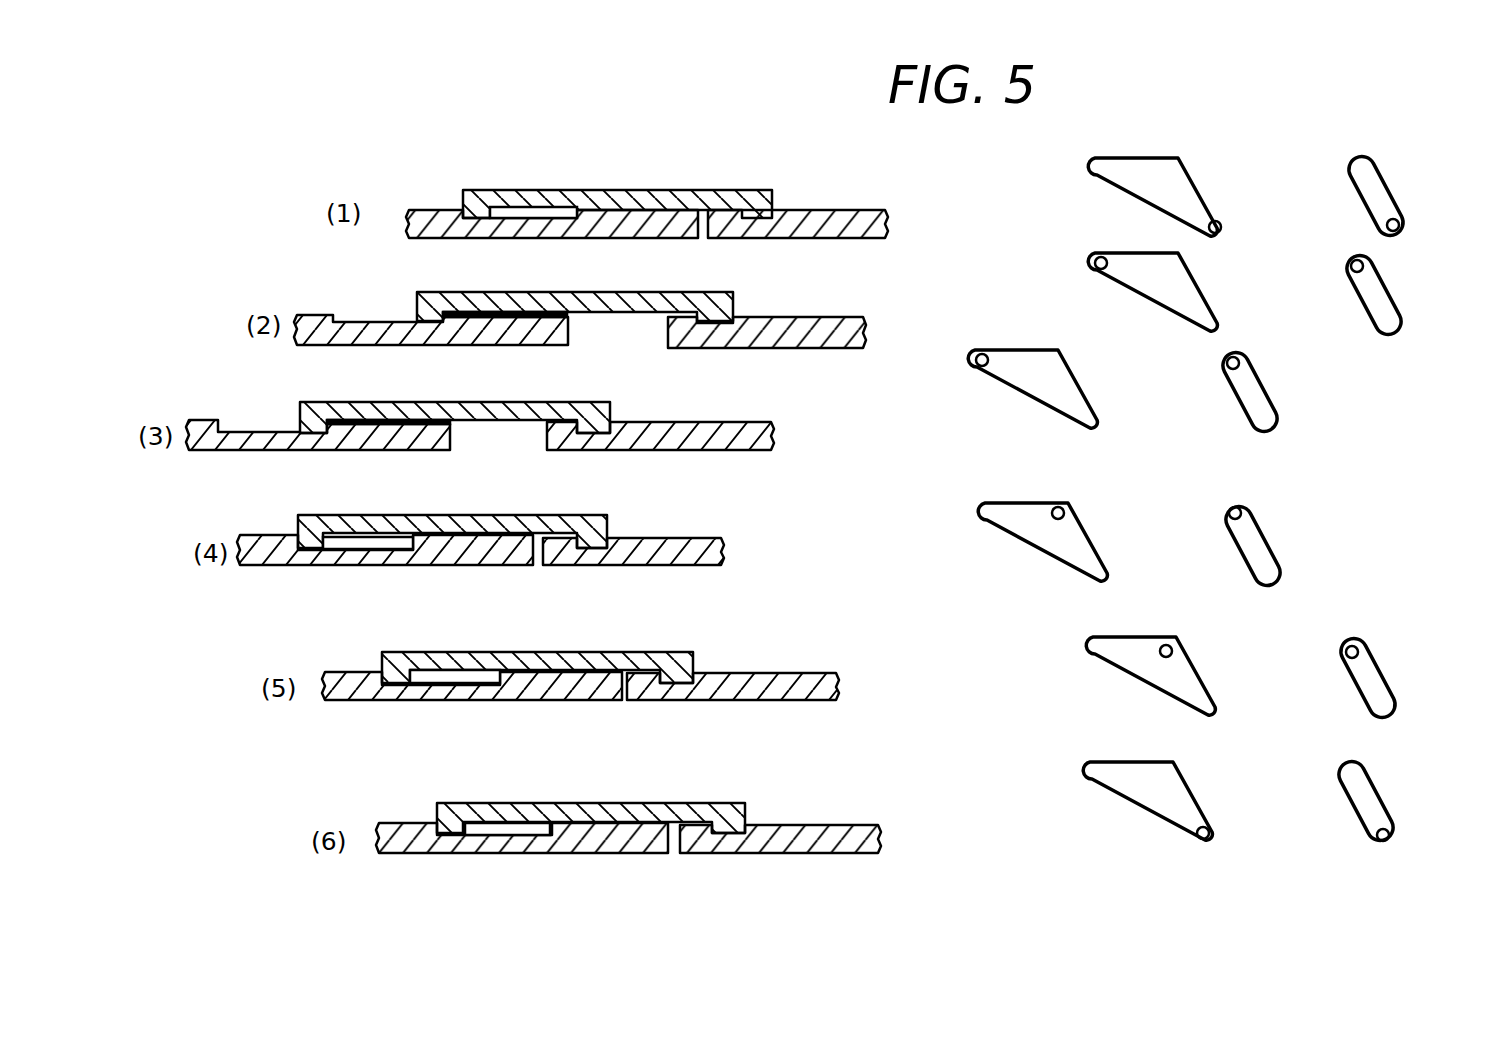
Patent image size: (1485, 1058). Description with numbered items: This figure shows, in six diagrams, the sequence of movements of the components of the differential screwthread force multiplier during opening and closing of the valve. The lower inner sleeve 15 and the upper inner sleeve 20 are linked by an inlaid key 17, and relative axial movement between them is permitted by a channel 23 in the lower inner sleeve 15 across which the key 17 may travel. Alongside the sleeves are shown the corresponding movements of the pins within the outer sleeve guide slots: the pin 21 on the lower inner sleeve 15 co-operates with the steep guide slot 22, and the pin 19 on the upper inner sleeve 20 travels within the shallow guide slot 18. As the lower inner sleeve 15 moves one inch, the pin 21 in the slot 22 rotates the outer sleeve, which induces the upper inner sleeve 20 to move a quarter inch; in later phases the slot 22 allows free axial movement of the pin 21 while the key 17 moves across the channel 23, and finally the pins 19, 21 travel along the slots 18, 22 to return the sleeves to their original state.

The lower inner sleeve 15 is at (623, 218).
The inlaid key 17 is at (557, 192).
The outer sleeve guide slot 18 is at (1365, 170).
The pin 19 is at (1400, 223).
The upper inner sleeve 20 is at (798, 222).
The pin 21 is at (1221, 222).
The outer sleeve guide slot 22 is at (1103, 162).
The channel 23 is at (507, 210).